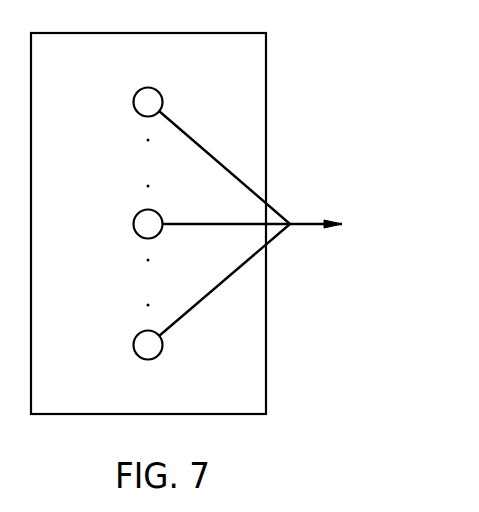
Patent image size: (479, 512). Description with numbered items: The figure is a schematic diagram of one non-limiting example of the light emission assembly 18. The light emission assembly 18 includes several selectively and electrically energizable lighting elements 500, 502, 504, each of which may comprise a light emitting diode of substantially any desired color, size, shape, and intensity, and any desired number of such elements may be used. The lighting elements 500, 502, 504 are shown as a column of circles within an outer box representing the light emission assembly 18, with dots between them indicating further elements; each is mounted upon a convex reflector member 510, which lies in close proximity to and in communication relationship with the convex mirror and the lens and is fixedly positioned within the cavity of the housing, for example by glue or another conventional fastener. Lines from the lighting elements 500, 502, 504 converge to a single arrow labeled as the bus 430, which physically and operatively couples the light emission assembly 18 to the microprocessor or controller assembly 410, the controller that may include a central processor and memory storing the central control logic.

The light emission assembly 18 is at (293, 87).
The lighting element 500 is at (138, 92).
The lighting element 502 is at (137, 213).
The lighting element 504 is at (140, 357).
The convex reflector member 510 is at (100, 253).
The bus 430 is at (290, 221).
The microprocessor or controller assembly 410 is at (371, 262).